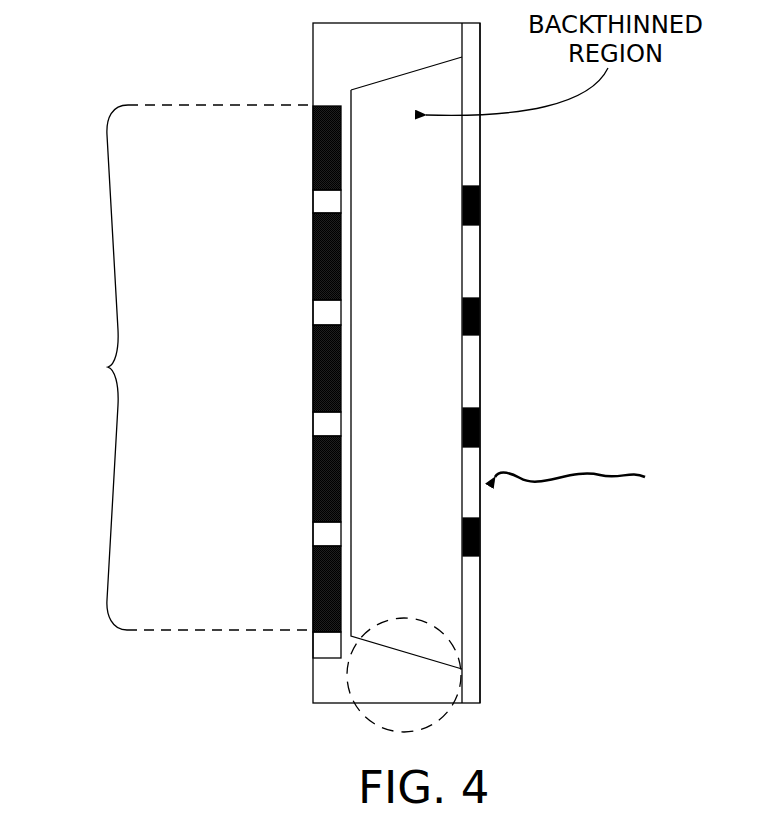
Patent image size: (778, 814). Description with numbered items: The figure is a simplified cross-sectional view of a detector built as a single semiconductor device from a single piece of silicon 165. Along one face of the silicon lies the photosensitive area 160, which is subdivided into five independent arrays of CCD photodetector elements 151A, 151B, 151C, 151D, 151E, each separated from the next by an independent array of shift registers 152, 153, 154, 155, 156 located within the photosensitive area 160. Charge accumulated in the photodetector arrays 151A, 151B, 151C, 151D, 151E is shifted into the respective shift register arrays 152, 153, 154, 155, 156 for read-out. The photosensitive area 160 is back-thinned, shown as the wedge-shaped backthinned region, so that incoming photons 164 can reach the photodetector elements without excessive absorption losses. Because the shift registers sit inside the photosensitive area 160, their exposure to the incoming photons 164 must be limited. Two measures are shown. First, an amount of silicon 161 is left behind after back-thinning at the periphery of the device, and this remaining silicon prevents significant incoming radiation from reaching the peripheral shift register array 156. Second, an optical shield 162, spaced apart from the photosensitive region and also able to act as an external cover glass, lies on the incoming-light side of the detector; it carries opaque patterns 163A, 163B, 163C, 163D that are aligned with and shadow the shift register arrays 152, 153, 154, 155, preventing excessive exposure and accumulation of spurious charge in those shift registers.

The photodetector array 151A is at (328, 148).
The photodetector array 151B is at (325, 260).
The photodetector array 151C is at (325, 365).
The photodetector array 151D is at (325, 468).
The photodetector array 151E is at (325, 580).
The shift register array 152 is at (325, 205).
The shift register array 153 is at (325, 313).
The shift register array 154 is at (325, 425).
The shift register array 155 is at (325, 535).
The shift register array 156 is at (327, 643).
The photosensitive area 160 is at (108, 367).
The amount of silicon 161 is at (447, 712).
The optical shield 162 is at (480, 262).
The opaque pattern 163A is at (480, 205).
The opaque pattern 163B is at (480, 316).
The opaque pattern 163C is at (480, 426).
The opaque pattern 163D is at (480, 536).
The incoming photons 164 is at (620, 472).
The silicon 165 is at (330, 60).